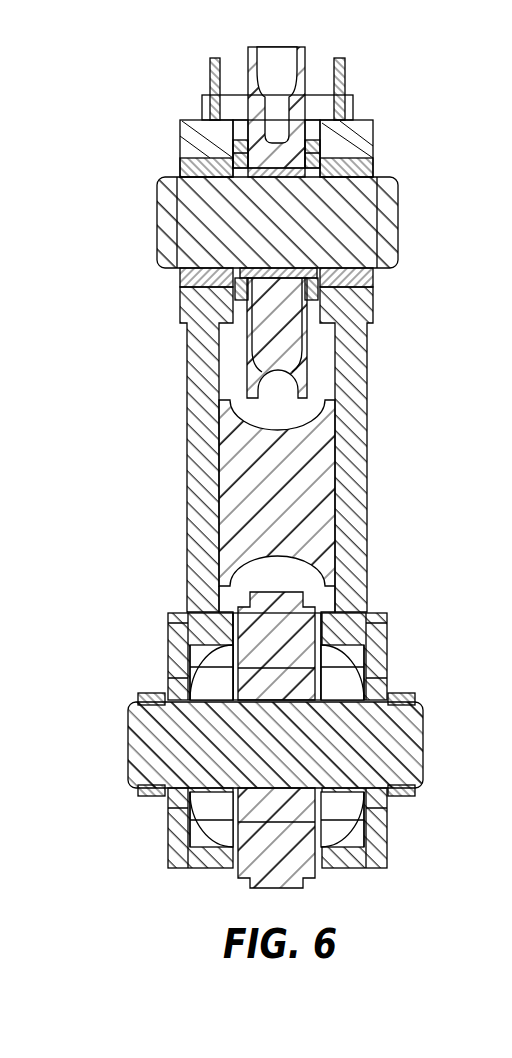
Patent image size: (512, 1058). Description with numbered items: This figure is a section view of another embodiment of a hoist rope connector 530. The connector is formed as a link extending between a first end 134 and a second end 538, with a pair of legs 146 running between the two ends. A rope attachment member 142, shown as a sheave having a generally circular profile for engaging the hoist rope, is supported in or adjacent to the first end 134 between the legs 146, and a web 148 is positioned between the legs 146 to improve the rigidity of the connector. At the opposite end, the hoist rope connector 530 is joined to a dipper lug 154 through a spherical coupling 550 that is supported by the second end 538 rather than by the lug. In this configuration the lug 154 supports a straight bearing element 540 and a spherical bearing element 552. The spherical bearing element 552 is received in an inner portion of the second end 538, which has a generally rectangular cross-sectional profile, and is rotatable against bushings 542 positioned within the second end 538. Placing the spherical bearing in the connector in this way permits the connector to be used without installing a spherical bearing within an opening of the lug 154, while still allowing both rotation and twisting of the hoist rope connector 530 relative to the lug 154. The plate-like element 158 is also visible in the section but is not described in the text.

The hoist rope connector 530 is at (418, 152).
The rope attachment member 142 is at (293, 80).
The first end 134 is at (190, 130).
The legs 146 is at (367, 512).
The web 148 is at (302, 453).
The lug 154 is at (265, 606).
The spherical coupling 550 is at (347, 652).
The straight bearing element 540 is at (300, 682).
The bushings 542 is at (360, 640).
The lower mounting plate 158 is at (145, 757).
The second end 538 is at (175, 850).
The spherical bearing element 552 is at (336, 803).